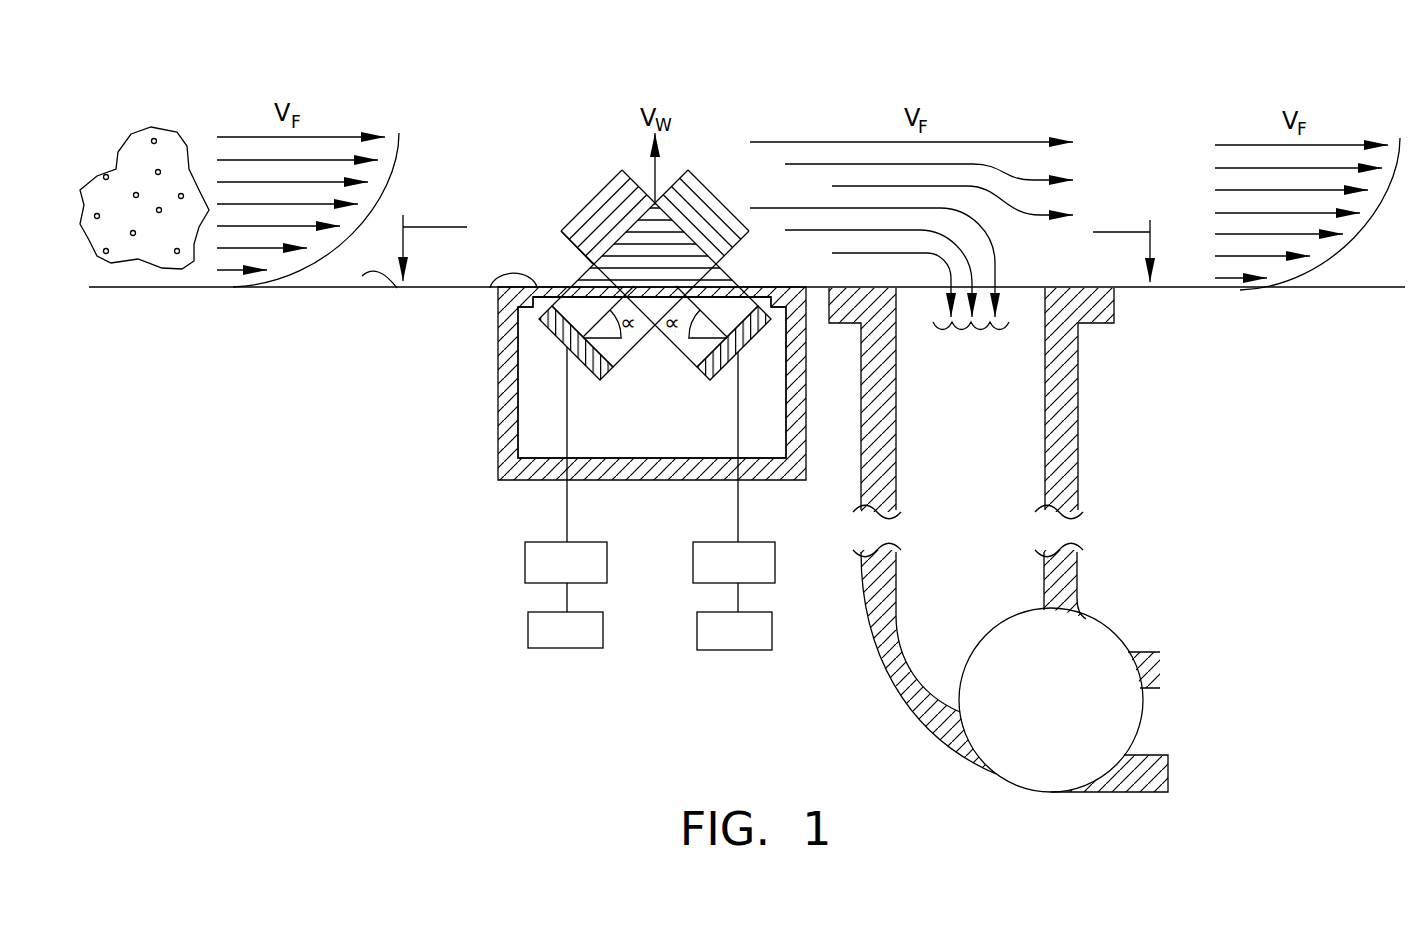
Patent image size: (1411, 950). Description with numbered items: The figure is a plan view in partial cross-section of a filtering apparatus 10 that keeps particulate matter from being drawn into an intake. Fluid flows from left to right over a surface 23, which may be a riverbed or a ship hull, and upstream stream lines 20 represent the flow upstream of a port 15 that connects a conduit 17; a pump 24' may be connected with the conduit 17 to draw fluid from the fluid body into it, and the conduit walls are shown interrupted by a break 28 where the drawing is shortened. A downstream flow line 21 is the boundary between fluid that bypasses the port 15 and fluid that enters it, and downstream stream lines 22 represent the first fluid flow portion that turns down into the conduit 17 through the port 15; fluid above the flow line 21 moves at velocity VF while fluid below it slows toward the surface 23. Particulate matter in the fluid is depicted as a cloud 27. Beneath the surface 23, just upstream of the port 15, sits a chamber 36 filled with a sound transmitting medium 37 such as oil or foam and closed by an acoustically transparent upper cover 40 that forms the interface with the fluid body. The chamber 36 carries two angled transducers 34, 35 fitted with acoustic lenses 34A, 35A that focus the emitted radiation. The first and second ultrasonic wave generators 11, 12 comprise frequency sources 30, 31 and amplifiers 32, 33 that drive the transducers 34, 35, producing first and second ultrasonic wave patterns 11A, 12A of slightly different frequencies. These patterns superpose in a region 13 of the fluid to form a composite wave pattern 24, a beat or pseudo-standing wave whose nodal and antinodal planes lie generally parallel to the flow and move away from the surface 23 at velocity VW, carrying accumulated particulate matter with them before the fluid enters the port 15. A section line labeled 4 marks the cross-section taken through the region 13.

The section line 4- 4 is at (776, 233).
The filtering apparatus 10 is at (445, 418).
The first ultrasonic wave generator 11 is at (503, 514).
The second ultrasonic wave generator 12 is at (776, 516).
The first ultrasonic wave pattern 11A is at (614, 182).
The second ultrasonic wave pattern 12A is at (696, 182).
The region 13 is at (630, 247).
The port 15 is at (1068, 300).
The conduit 17 is at (1055, 400).
The upstream stream lines 20 is at (175, 108).
The downstream flow line 21 is at (340, 137).
The downstream stream lines 22 is at (972, 327).
The surface 23 is at (362, 276).
The composite wave pattern 24 is at (544, 222).
The pump 24' is at (1071, 690).
The cloud 27 is at (131, 134).
The conduit break 28 is at (968, 502).
The frequency source 30 is at (528, 631).
The frequency source 31 is at (697, 632).
The amplifier 32 is at (525, 558).
The amplifier 33 is at (693, 559).
The transducer 34 is at (558, 341).
The transducer 35 is at (746, 341).
The acoustic lens 34A is at (606, 381).
The acoustic lens 35A is at (702, 381).
The chamber 36 is at (692, 458).
The sound transmitting medium 37 is at (556, 447).
The upper cover 40 is at (490, 288).